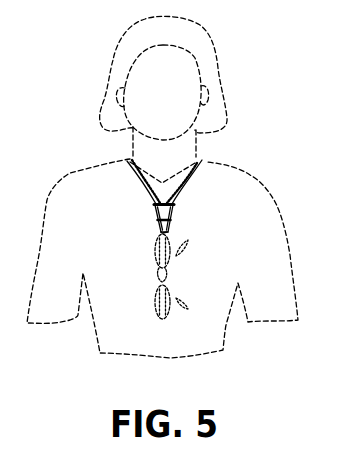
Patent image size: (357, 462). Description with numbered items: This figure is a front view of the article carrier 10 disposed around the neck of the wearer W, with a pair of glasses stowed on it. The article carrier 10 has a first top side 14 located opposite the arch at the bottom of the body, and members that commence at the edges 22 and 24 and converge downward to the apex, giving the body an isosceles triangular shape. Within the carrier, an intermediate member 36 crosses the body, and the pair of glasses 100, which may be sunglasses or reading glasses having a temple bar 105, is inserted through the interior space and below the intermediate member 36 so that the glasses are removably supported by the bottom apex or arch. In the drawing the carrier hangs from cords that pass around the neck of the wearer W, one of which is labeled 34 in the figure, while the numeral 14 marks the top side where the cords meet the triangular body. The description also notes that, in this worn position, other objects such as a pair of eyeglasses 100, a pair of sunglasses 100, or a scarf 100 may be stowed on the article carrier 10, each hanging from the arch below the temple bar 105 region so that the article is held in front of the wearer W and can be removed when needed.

The wearer W is at (243, 107).
The first top side 14 is at (127, 161).
The second cord 34 is at (198, 167).
The article carrier 10 is at (187, 216).
The edge 22 is at (153, 205).
The edge 24 is at (174, 205).
The intermediate member 36 is at (156, 216).
The temple bar 105 is at (170, 276).
The pair of glasses 100 is at (172, 296).